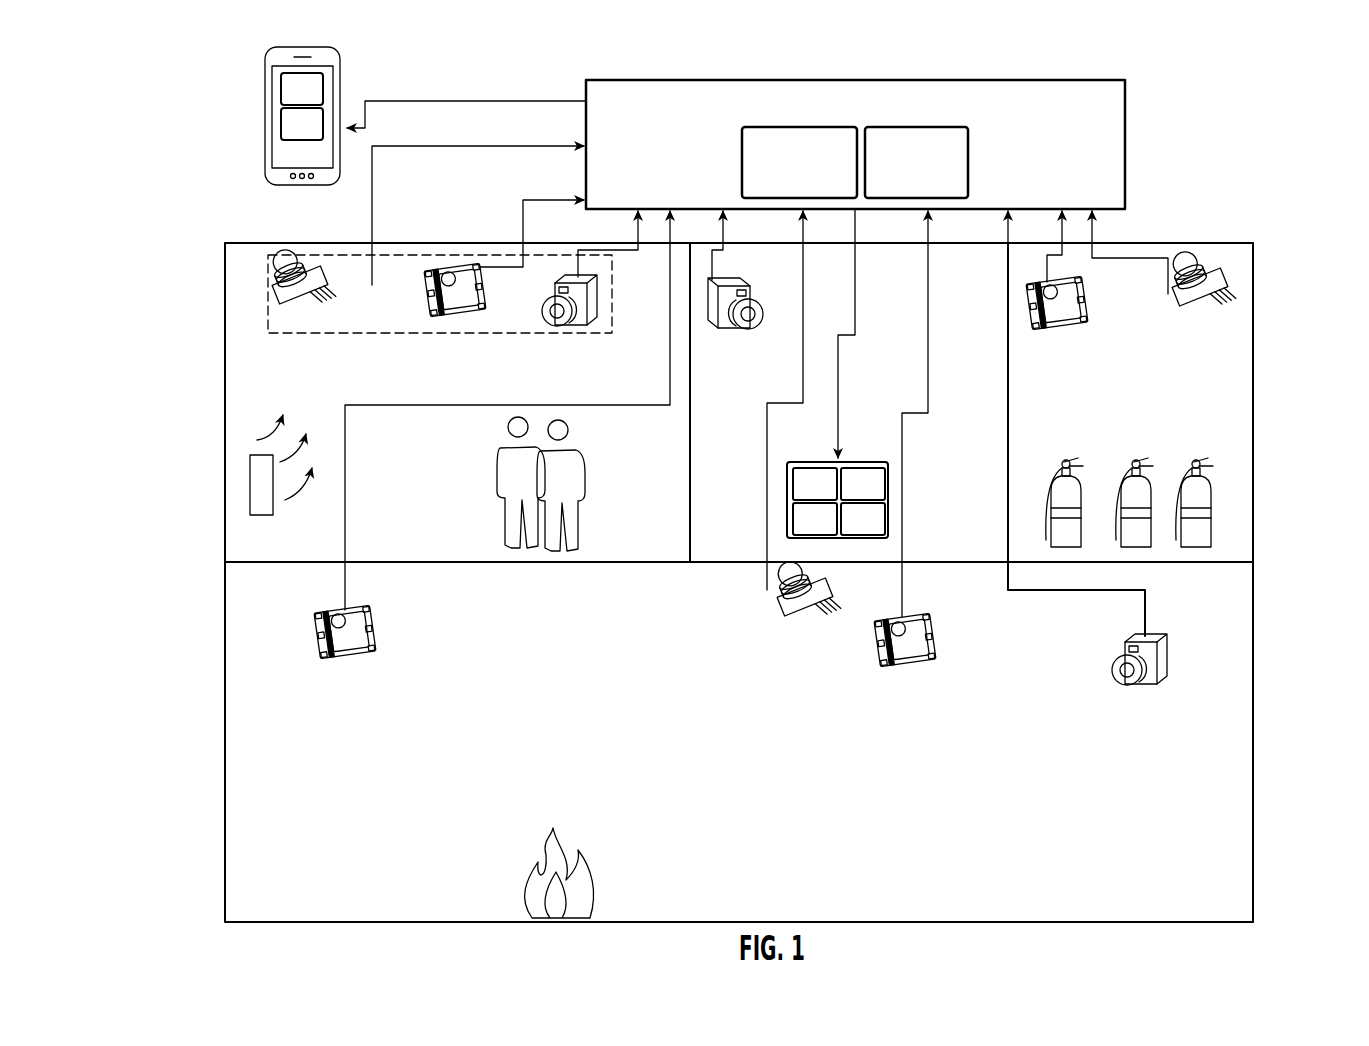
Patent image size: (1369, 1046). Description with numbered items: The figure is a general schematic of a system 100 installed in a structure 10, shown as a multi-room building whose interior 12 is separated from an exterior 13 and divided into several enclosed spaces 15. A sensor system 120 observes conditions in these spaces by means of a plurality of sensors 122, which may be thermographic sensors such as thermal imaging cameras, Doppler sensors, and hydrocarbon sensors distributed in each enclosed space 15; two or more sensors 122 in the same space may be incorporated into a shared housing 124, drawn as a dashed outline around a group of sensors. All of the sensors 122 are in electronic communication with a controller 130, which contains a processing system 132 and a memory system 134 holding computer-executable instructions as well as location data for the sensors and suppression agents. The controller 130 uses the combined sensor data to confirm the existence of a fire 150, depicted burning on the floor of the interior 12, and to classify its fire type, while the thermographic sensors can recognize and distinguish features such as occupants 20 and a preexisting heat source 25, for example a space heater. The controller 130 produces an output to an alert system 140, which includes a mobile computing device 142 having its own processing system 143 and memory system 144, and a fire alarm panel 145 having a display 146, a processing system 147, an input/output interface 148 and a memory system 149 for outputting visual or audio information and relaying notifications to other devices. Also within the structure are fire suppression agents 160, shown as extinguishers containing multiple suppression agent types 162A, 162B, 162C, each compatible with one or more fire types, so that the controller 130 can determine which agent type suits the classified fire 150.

The structure 10 is at (1146, 212).
The interior 12 is at (240, 636).
The exterior 13 is at (1274, 212).
The enclosed spaces 15 is at (240, 330).
The occupants 20 is at (503, 497).
The preexisting heat source 25 is at (255, 487).
The system 100 is at (178, 168).
The sensor system 120 is at (253, 262).
The sensors 122 is at (285, 300).
The shared housing 124 is at (614, 310).
The controller 130 is at (1125, 125).
The processing system 132 is at (742, 160).
The memory system 134 is at (968, 170).
The alert system 140 is at (554, 316).
The mobile computing devices 142 is at (343, 70).
The processing system 143 is at (302, 89).
The memory system 144 is at (302, 124).
The fire alarm panel 145 is at (837, 476).
The display 146 is at (815, 484).
The processing system 147 is at (863, 484).
The input/output interface 148 is at (815, 519).
The memory system 149 is at (863, 519).
The fire 150 is at (596, 882).
The fire suppression agents 160 is at (1181, 502).
The suppression agent type 162A is at (1070, 466).
The suppression agent type 162B is at (1140, 466).
The suppression agent type 162C is at (1200, 466).